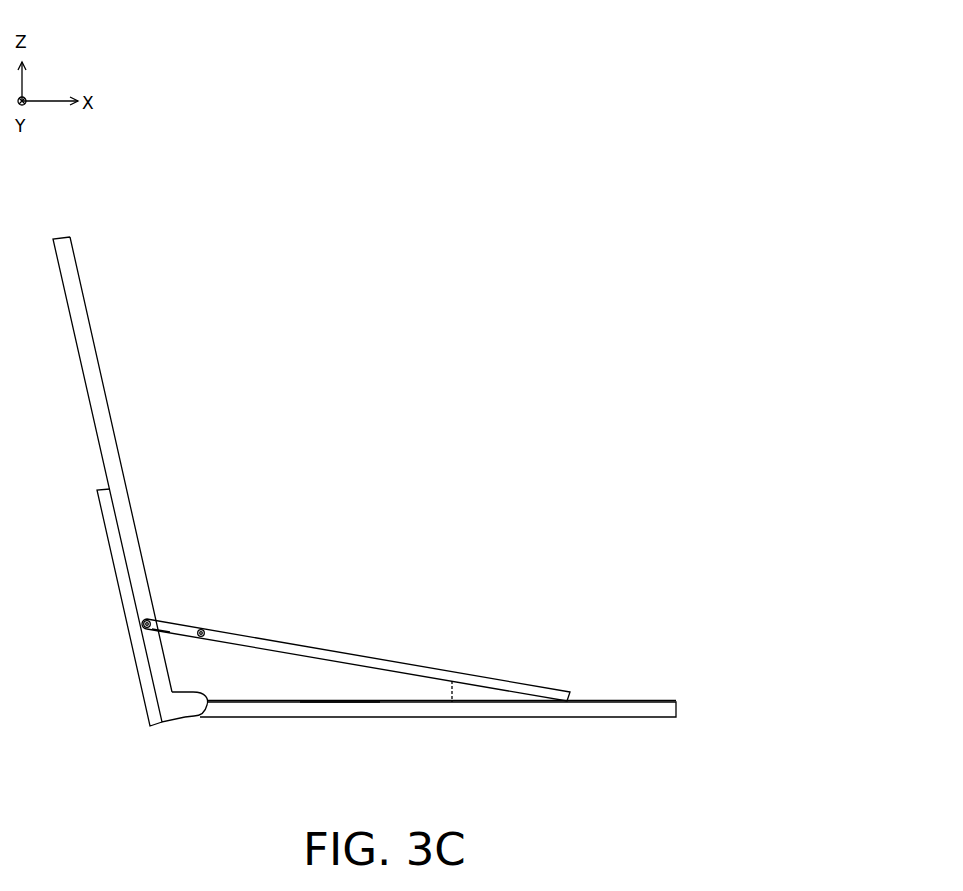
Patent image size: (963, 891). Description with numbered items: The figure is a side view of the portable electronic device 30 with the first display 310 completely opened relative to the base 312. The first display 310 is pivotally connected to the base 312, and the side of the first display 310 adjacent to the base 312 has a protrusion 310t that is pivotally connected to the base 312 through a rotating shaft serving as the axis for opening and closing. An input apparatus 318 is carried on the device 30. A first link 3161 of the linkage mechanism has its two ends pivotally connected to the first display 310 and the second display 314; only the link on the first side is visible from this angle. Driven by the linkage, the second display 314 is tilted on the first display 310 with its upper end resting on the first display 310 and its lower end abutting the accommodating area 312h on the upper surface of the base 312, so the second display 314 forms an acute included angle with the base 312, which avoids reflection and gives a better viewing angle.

The portable electronic device 30 is at (741, 171).
The first display 310 is at (110, 276).
The protrusion 310t is at (187, 705).
The base 312 is at (635, 708).
The accommodating area 312h is at (336, 683).
The second display 314 is at (333, 642).
The first link 3161 is at (173, 630).
The input apparatus 318 is at (124, 587).